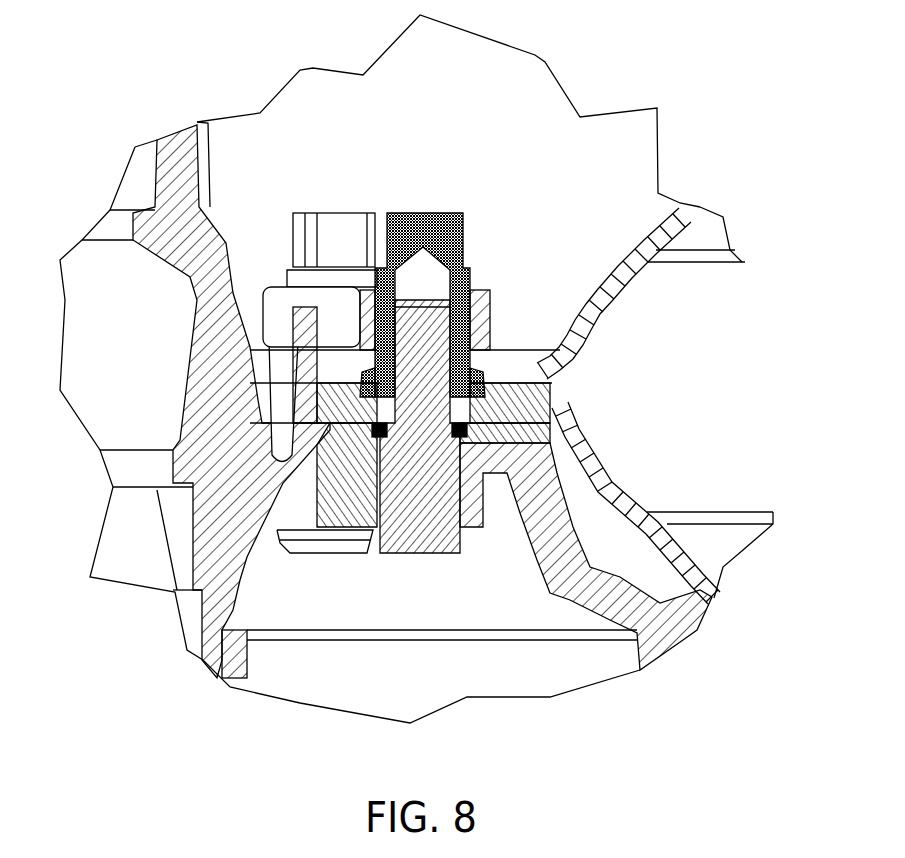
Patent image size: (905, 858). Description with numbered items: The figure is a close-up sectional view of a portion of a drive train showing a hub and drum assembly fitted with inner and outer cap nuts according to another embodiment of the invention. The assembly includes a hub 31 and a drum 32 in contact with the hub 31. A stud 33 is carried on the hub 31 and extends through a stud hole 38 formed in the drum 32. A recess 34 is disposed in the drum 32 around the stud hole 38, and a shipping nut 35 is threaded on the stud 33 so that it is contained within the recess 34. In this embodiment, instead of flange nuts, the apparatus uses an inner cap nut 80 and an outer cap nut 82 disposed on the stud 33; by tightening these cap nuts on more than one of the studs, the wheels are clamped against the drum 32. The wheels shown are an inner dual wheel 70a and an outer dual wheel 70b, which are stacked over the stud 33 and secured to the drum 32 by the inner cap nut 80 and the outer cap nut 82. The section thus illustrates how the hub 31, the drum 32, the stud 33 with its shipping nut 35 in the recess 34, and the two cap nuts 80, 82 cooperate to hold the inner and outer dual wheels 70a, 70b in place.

The hub 31 is at (331, 371).
The drum 32 is at (643, 620).
The stud 33 is at (390, 268).
The recess 34 is at (478, 412).
The shipping nut 35 is at (478, 404).
The stud hole 38 is at (463, 443).
The inner cap nut 80 is at (463, 213).
The outer cap nut 82 is at (483, 297).
The inner dual wheel 70a is at (690, 563).
The outer dual wheel 70b is at (672, 210).